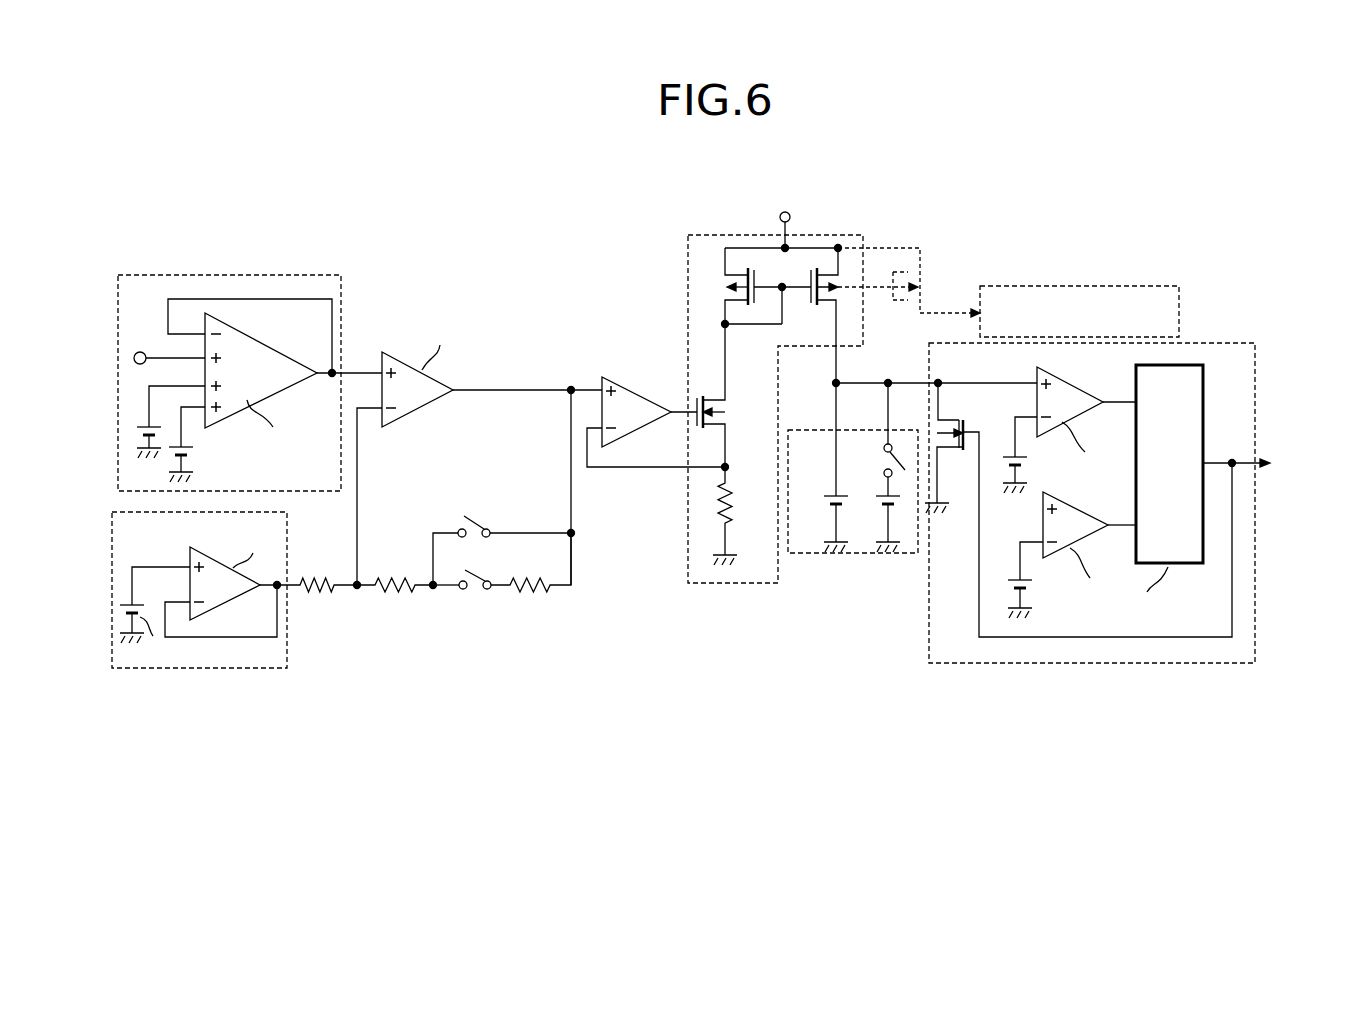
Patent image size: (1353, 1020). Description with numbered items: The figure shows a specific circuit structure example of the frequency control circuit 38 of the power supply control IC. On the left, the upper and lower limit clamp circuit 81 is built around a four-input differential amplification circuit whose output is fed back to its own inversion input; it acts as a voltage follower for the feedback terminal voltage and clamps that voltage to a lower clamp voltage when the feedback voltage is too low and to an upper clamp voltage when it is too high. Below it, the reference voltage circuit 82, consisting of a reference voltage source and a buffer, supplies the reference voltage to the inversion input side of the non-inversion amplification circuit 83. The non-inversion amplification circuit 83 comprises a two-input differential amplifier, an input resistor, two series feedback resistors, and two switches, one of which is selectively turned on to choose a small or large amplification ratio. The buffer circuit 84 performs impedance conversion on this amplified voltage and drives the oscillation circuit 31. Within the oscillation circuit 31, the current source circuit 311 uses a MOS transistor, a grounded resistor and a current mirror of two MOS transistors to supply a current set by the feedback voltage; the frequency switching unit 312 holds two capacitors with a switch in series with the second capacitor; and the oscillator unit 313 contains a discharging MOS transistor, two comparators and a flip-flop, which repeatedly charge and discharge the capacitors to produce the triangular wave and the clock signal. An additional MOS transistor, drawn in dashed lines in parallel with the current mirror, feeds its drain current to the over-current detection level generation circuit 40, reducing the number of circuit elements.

The upper and lower limit clamp circuit 81 is at (246, 274).
The reference voltage circuit 82 is at (216, 668).
The non-inversion amplification circuit 83 is at (585, 640).
The buffer circuit 84 is at (635, 383).
The frequency control circuit 38 is at (561, 265).
The oscillation circuit 31 is at (999, 452).
The current source circuit 311 is at (828, 235).
The frequency switching unit 312 is at (812, 553).
The oscillator unit 313 is at (1257, 370).
The over-current detection level generation circuit 40 is at (1097, 286).